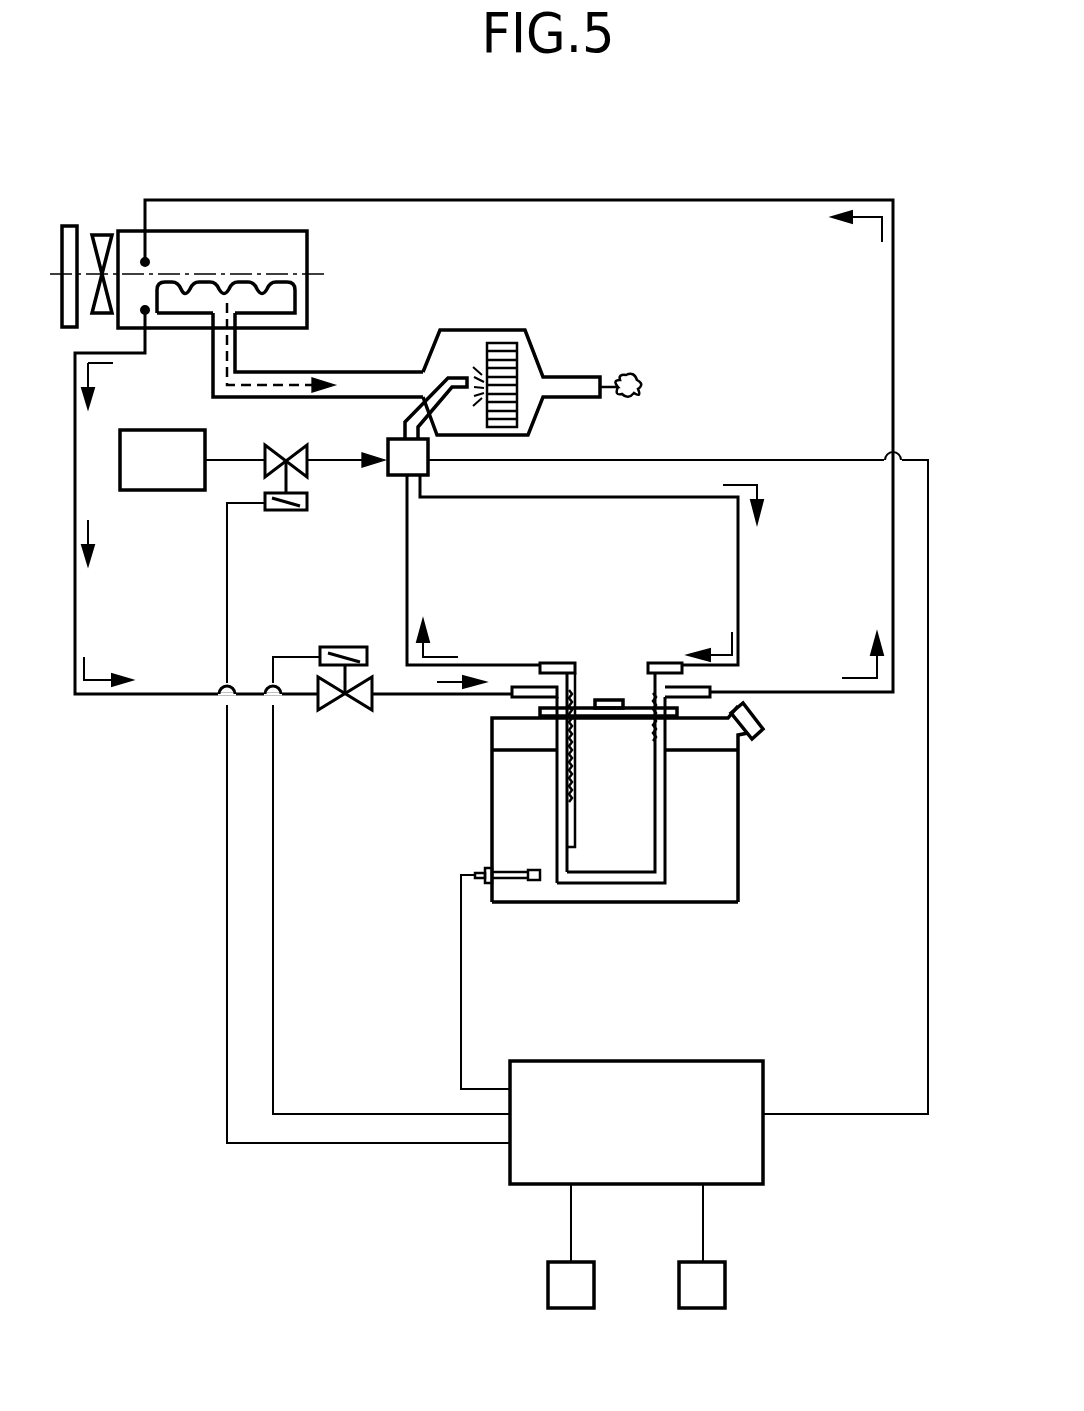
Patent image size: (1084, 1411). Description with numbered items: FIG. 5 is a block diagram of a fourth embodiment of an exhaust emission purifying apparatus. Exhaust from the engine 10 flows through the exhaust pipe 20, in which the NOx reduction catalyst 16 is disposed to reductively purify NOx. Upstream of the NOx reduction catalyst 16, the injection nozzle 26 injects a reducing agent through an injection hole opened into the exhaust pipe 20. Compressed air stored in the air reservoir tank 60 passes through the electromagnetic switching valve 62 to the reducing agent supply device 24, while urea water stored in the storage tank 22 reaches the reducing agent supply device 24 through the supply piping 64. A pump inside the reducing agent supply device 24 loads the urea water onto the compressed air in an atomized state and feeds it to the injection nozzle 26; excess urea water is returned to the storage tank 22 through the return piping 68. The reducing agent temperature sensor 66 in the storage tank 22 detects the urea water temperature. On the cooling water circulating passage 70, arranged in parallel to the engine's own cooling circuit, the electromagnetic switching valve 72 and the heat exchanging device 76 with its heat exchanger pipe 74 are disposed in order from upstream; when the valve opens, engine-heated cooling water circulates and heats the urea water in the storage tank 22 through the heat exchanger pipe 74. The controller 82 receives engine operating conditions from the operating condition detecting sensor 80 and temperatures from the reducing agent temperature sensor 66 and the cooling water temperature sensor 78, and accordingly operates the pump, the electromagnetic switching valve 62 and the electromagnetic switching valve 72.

The engine 10 is at (118, 231).
The NOx reduction catalyst 16 is at (503, 357).
The exhaust pipe 20 is at (367, 372).
The storage tank 22 is at (492, 847).
The reducing agent supply device 24 is at (390, 476).
The injection nozzle 26 is at (457, 377).
The air reservoir tank 60 is at (168, 430).
The electromagnetic switching valve 62 is at (263, 447).
The supply piping 64 is at (405, 535).
The reducing agent temperature sensor 66 is at (508, 883).
The return piping 68 is at (742, 573).
The cooling water circulating passage 70 is at (456, 200).
The electromagnetic switching valve 72 is at (362, 708).
The heat exchanger pipe 74 is at (560, 753).
The heat exchanging device 76 is at (648, 885).
The cooling water temperature sensor 78 is at (565, 1308).
The operating condition detecting sensor 80 is at (700, 1308).
The controller 82 is at (765, 1075).